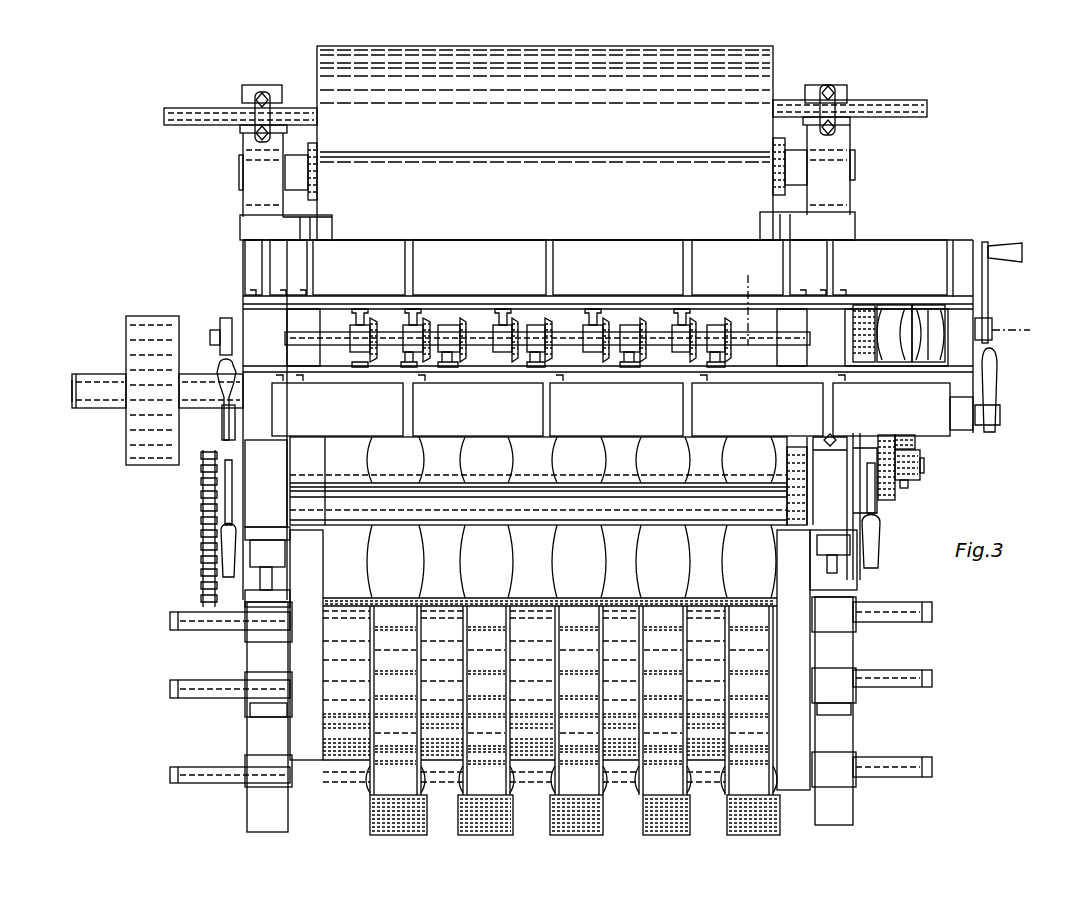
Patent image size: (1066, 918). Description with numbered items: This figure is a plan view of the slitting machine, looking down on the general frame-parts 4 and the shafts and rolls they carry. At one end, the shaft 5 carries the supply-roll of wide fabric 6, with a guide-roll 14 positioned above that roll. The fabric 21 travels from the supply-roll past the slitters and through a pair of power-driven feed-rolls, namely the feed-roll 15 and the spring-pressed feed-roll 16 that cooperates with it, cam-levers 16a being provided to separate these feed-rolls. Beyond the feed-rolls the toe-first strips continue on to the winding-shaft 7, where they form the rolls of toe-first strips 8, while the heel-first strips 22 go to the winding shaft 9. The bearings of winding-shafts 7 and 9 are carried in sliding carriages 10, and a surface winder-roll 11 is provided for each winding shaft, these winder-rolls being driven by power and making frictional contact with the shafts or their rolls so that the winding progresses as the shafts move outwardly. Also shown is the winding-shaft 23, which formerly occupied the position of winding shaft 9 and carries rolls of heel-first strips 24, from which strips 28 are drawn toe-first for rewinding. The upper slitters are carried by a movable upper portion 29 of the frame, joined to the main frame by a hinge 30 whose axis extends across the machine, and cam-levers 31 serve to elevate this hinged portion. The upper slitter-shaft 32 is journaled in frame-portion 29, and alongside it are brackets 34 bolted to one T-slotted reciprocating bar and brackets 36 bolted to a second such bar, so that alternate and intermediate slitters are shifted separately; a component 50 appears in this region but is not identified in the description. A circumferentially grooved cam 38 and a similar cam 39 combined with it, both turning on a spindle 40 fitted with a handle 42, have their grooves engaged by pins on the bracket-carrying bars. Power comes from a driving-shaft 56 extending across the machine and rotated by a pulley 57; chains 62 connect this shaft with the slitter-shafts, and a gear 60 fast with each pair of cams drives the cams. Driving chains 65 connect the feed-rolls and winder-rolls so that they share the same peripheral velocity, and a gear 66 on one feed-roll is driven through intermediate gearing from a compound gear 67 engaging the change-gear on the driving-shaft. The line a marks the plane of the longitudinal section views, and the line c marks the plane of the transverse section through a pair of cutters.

The general frame-parts 4 is at (845, 196).
The shaft for the supply-roll 5 is at (870, 101).
The supply-roll of wide fabric 6 is at (773, 76).
The winding-shaft 7 is at (880, 674).
The rolls of toe-first strips 8 is at (696, 645).
The winding shaft 9 is at (890, 607).
The sliding carriages 10 is at (245, 641).
The surface winder-rolls 11 is at (310, 579).
The guide-roll 14 is at (776, 178).
The feed-roll 15 is at (793, 447).
The spring-pressed feed-roll 16 is at (710, 505).
The cam-levers 16a is at (881, 558).
The fabric 21 is at (487, 168).
The heel-first strips 22 is at (571, 561).
The winding-shaft 23 is at (890, 758).
The rolls of heel-first strips 24 is at (368, 810).
The strips 28 is at (758, 657).
The movable upper portion of the general frame 29 is at (252, 262).
The hinge 30 is at (335, 231).
The cam-levers 31 is at (997, 372).
The upper slitter-shaft 32 is at (790, 336).
The brackets 34 is at (573, 322).
The brackets 36 is at (626, 352).
The circumferentially grooved cam 38 is at (898, 308).
The cam 39 is at (921, 308).
The spindle 40 is at (993, 338).
The handle 42 is at (988, 284).
The gear 50 is at (368, 322).
The driving-shaft 56 is at (72, 390).
The pulley 57 is at (143, 321).
The gear 60 is at (858, 305).
The chains 62 is at (221, 323).
The driving chains 65 is at (202, 525).
The gear 66 is at (911, 497).
The compound gear 67 is at (918, 443).
The line a is at (755, 300).
The line c is at (1016, 330).